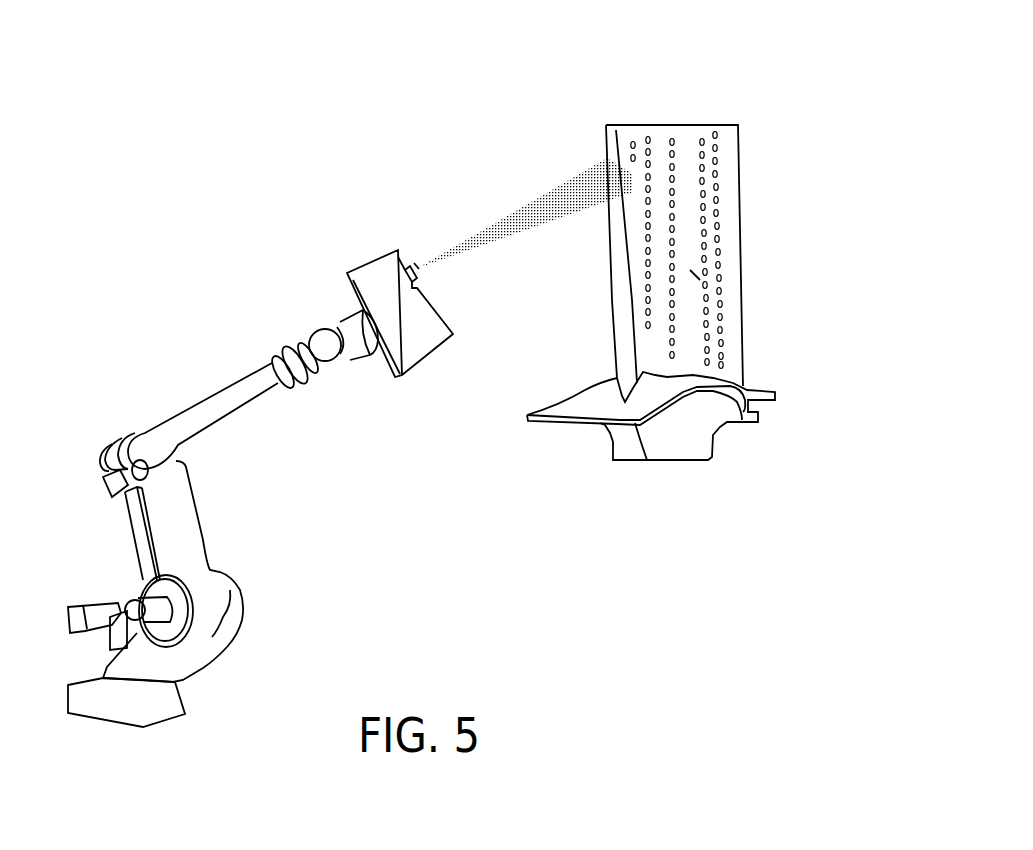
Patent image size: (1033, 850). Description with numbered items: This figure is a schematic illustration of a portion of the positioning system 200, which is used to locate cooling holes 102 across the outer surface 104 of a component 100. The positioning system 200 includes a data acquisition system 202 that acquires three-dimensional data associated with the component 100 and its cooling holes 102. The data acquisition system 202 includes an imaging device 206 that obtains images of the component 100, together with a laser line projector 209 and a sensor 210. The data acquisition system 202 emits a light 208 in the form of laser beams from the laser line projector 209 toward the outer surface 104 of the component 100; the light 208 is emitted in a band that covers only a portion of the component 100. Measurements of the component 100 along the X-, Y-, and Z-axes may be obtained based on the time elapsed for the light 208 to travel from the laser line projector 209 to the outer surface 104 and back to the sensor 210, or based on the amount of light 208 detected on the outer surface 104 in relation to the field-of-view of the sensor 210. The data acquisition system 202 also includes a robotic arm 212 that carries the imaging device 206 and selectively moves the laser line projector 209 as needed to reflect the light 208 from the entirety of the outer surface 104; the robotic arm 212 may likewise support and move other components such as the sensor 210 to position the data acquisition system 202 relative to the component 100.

The component 100 is at (678, 287).
The cooling holes 102 is at (702, 208).
The outer surface 104 is at (687, 287).
The positioning system 200 is at (750, 82).
The data acquisition system 202 is at (173, 530).
The imaging device 206 is at (413, 343).
The light 208 is at (570, 195).
The laser line projector 209 is at (412, 273).
The sensor 210 is at (417, 288).
The robotic arm 212 is at (210, 417).